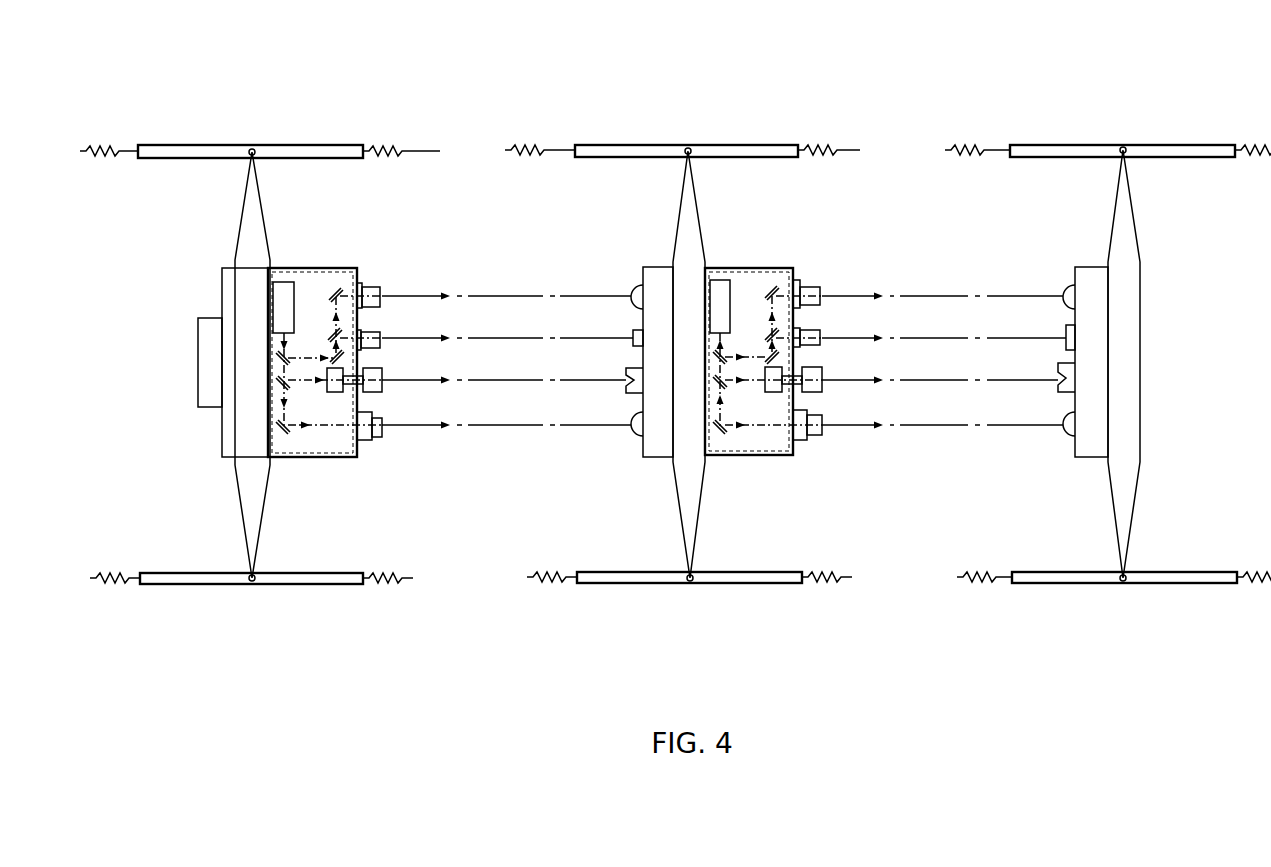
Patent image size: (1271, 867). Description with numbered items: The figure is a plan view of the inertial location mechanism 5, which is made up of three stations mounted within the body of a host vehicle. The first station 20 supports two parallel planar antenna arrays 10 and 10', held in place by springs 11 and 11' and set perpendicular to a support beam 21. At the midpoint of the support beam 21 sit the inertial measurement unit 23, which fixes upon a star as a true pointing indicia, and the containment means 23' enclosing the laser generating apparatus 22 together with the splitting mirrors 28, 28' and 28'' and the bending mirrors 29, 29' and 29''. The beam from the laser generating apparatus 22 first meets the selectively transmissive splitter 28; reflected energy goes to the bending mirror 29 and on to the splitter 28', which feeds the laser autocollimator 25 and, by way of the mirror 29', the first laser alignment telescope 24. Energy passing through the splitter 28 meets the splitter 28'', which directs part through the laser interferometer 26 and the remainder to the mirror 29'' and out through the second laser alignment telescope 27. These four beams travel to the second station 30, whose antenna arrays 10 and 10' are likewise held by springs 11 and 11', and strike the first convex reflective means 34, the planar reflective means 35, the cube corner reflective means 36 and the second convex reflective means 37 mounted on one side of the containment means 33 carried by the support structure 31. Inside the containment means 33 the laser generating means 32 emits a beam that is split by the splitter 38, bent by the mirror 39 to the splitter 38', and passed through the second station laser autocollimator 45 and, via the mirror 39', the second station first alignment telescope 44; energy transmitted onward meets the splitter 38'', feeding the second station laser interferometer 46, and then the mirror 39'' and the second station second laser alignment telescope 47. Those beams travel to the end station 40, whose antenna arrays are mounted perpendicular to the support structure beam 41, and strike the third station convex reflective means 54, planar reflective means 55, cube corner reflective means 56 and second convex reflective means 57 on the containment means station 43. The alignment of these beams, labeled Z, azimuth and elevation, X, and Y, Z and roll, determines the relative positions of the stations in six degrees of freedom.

The inertial location mechanism 5 is at (683, 88).
The planar antenna array 10 is at (688, 598).
The planar antenna array 10' is at (686, 125).
The spring 11 is at (680, 599).
The spring 11' is at (675, 124).
The first station 20 is at (230, 634).
The support beam 21 is at (265, 510).
The laser generating apparatus 22 is at (275, 318).
The inertial measurement unit 23 is at (196, 381).
The containment means 23' is at (312, 340).
The first laser alignment telescope 24 is at (383, 305).
The laser autocollimator 25 is at (383, 350).
The laser interferometer 26 is at (385, 392).
The second laser alignment telescope 27 is at (378, 440).
The first beam splitting reflective means 28 is at (263, 345).
The second splitting reflective means 28' is at (318, 325).
The second beam splitting selectively transmissive reflective means 28'' is at (262, 392).
The non-selectively transmissive reflector means 29 is at (319, 348).
The second non-selectively transmissive reflective means 29' is at (319, 289).
The third beam bending reflective means 29'' is at (262, 436).
The second station 30 is at (668, 634).
The support structure 31 is at (702, 510).
The laser generating means 32 is at (718, 280).
The containment means 33 is at (745, 268).
The first convex reflective means 34 is at (633, 310).
The planar reflective means 35 is at (628, 346).
The cube corner reflective means 36 is at (625, 392).
The second convex reflective means 37 is at (632, 436).
The first laser beam splitting means 38 is at (700, 346).
The second station laser energy splitting reflective means 38' is at (755, 324).
The third laser energy beam splitting reflective means 38'' is at (697, 382).
The first laser beam bending means 39 is at (756, 347).
The second laser energy beam bending means 39' is at (755, 290).
The third laser energy beam bending reflective means 39'' is at (697, 423).
The end station 40 is at (1098, 628).
The support structure beam 41 is at (1140, 510).
The containment means station 43 is at (1090, 268).
The second station first alignment telescope 44 is at (812, 286).
The second station laser autocollimator 45 is at (818, 330).
The second station laser interferometer 46 is at (820, 368).
The second station second laser alignment telescope 47 is at (815, 416).
The third station convex reflective means 54 is at (1065, 290).
The third station planar reflective means 55 is at (1066, 330).
The third station cube corner reflective means 56 is at (1060, 375).
The third station second convex reflective means 57 is at (1065, 418).